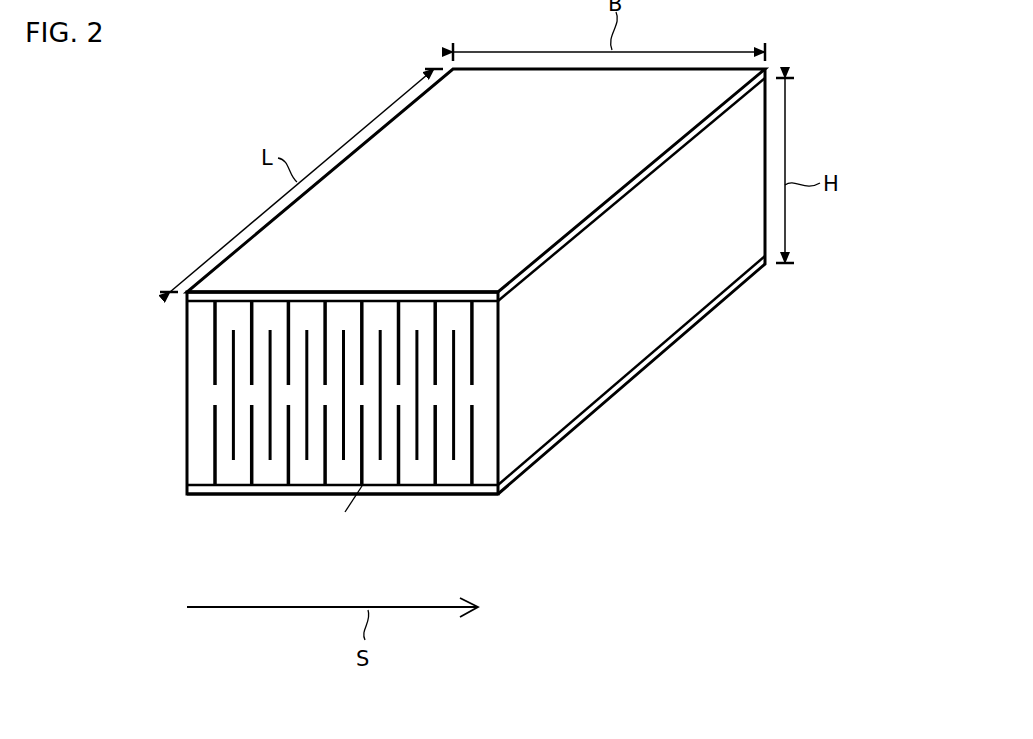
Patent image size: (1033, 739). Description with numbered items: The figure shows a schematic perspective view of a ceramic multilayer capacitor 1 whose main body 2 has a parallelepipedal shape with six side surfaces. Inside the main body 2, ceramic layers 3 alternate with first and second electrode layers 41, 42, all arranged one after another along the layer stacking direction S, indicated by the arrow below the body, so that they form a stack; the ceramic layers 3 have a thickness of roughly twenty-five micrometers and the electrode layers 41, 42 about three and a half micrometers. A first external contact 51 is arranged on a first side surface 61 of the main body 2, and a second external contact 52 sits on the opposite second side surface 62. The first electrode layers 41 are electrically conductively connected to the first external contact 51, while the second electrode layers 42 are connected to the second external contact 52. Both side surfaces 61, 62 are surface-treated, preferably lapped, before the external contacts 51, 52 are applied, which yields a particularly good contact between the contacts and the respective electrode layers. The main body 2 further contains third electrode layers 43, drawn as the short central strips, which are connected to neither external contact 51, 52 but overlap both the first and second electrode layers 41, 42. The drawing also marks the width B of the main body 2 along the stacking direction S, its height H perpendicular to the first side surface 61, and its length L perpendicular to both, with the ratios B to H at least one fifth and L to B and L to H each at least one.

The multilayer capacitor 1 is at (430, 311).
The main body 2 is at (297, 403).
The ceramic layers 3 is at (487, 467).
The first electrode layers 41 is at (213, 455).
The second electrode layers 42 is at (212, 345).
The third electrode layers 43 is at (228, 396).
The first external contact 51 is at (258, 490).
The second external contact 52 is at (417, 295).
The first side surface 61 is at (362, 488).
The second side surface 62 is at (317, 300).